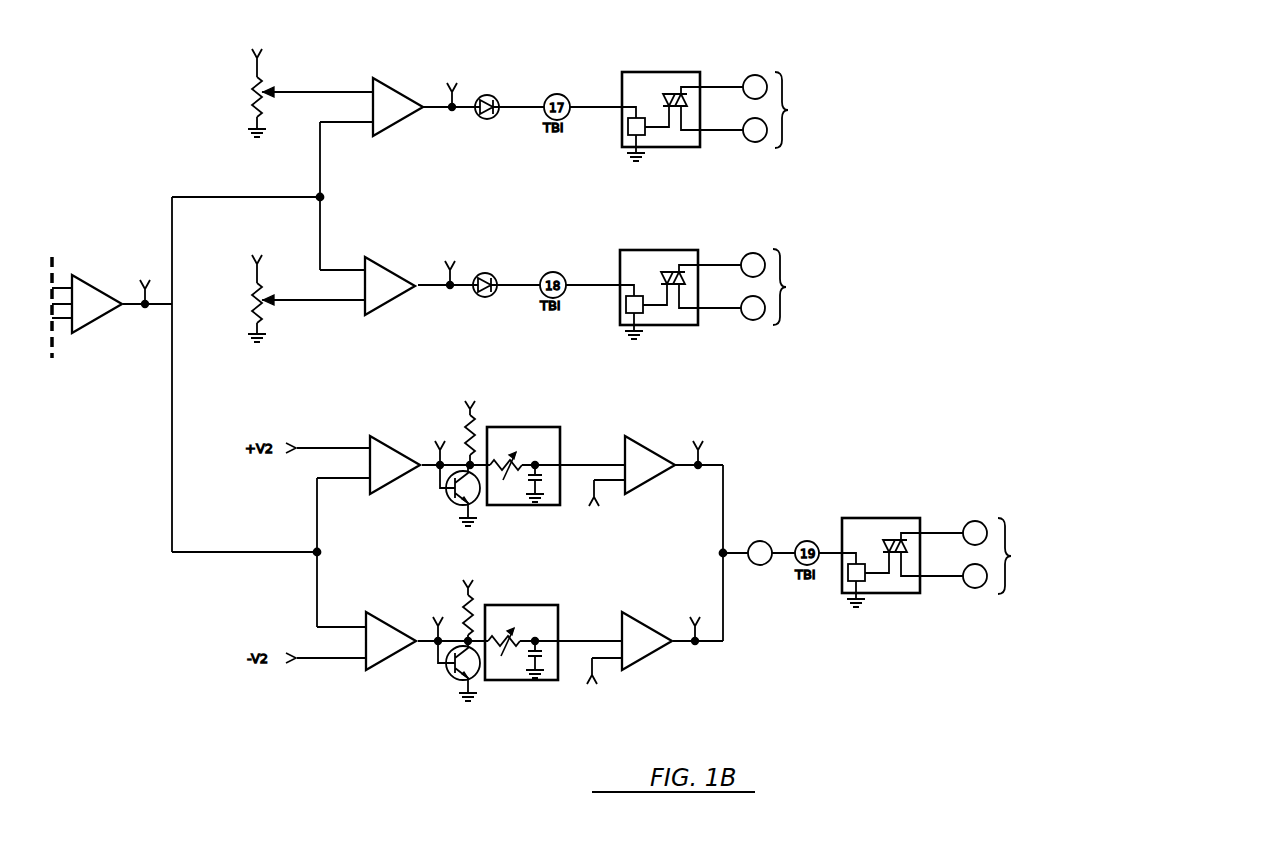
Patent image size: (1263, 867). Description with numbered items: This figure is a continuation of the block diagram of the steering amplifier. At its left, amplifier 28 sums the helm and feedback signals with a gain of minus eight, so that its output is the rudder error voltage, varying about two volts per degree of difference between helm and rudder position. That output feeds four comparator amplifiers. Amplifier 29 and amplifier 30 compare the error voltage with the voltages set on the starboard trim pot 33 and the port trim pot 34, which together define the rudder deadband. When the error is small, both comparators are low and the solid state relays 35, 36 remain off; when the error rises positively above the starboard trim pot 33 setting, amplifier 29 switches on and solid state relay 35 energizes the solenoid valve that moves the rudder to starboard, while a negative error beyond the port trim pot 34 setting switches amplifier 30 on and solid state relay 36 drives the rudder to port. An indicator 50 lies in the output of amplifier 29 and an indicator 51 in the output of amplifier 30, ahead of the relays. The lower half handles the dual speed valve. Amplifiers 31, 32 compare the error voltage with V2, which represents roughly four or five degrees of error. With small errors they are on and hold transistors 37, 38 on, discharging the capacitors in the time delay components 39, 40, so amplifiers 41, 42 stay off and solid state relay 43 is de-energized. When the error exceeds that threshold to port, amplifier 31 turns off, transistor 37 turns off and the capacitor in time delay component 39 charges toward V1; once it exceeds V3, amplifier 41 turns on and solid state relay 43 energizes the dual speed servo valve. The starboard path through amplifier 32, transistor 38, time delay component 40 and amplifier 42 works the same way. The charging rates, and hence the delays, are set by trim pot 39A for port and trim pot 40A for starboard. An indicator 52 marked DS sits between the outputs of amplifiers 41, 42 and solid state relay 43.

The amplifier 28 is at (86, 279).
The amplifier 29 is at (388, 86).
The amplifier 30 is at (392, 272).
The amplifier 31 is at (393, 480).
The amplifier 32 is at (384, 626).
The starboard trim pot 33 is at (263, 76).
The port trim pot 34 is at (264, 280).
The solid state relay 35 is at (694, 71).
The solid state relay 36 is at (692, 250).
The transistor 37 is at (453, 506).
The transistor 38 is at (470, 681).
The time delay component 39 is at (547, 466).
The trim pot 39A is at (507, 474).
The time delay component 40 is at (545, 650).
The trim pot 40A is at (506, 652).
The amplifier 41 is at (640, 447).
The amplifier 42 is at (638, 624).
The solid state relay 43 is at (912, 519).
The starboard indicator LED 50 is at (498, 98).
The port indicator LED 51 is at (496, 284).
The dual speed indicator lamp DS 52 is at (767, 540).